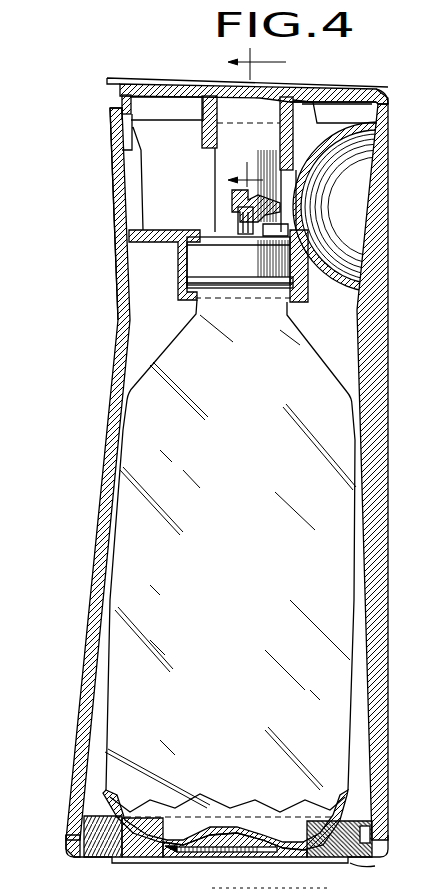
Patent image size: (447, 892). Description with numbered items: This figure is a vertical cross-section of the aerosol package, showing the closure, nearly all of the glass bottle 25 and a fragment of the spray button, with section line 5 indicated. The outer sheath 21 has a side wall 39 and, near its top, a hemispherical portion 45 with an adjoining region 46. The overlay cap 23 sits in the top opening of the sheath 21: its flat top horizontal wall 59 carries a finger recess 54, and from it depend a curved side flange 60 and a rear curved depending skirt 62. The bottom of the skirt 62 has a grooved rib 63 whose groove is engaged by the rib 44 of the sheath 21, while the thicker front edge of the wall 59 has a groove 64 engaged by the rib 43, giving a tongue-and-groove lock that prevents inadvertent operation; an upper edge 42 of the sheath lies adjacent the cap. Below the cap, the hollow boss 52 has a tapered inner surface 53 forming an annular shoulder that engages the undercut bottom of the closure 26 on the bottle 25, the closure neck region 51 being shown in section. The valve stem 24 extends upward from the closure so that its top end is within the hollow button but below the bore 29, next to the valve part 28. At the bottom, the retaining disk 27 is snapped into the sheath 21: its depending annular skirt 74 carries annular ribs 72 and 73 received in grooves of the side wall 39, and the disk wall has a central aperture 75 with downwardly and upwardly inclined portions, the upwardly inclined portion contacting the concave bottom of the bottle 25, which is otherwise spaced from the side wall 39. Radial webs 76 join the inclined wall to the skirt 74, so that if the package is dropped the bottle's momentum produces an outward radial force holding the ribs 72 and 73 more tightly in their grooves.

The sheath 21 is at (108, 250).
The overlay cap 23 is at (136, 67).
The valve stem 24 is at (239, 228).
The bottle 25 is at (190, 346).
The closure 26 is at (196, 262).
The retaining disk 27 is at (138, 862).
The nozzle piece 28 is at (270, 213).
The bore 29 is at (234, 197).
The side wall 39 is at (114, 362).
The wall top edge 42 is at (110, 104).
The rib 43 is at (390, 103).
The rib 44 is at (113, 112).
The hemispherical portion 45 is at (352, 242).
The lens rim 46 is at (357, 207).
The neck threads 51 is at (262, 246).
The hollow boss 52 is at (180, 282).
The inner surface 53 is at (300, 304).
The finger recess 54 is at (160, 80).
The top horizontal wall 59 is at (335, 90).
The side flange 60 is at (196, 98).
The rear curved depending skirt 62 is at (121, 96).
The grooved rib 63 is at (133, 104).
The groove 64 is at (376, 93).
The annular rib 72 is at (72, 828).
The annular rib 73 is at (64, 846).
The depending annular skirt 74 is at (80, 866).
The central aperture 75 is at (180, 861).
The radial web 76 is at (378, 869).
The section line 5 is at (266, 117).